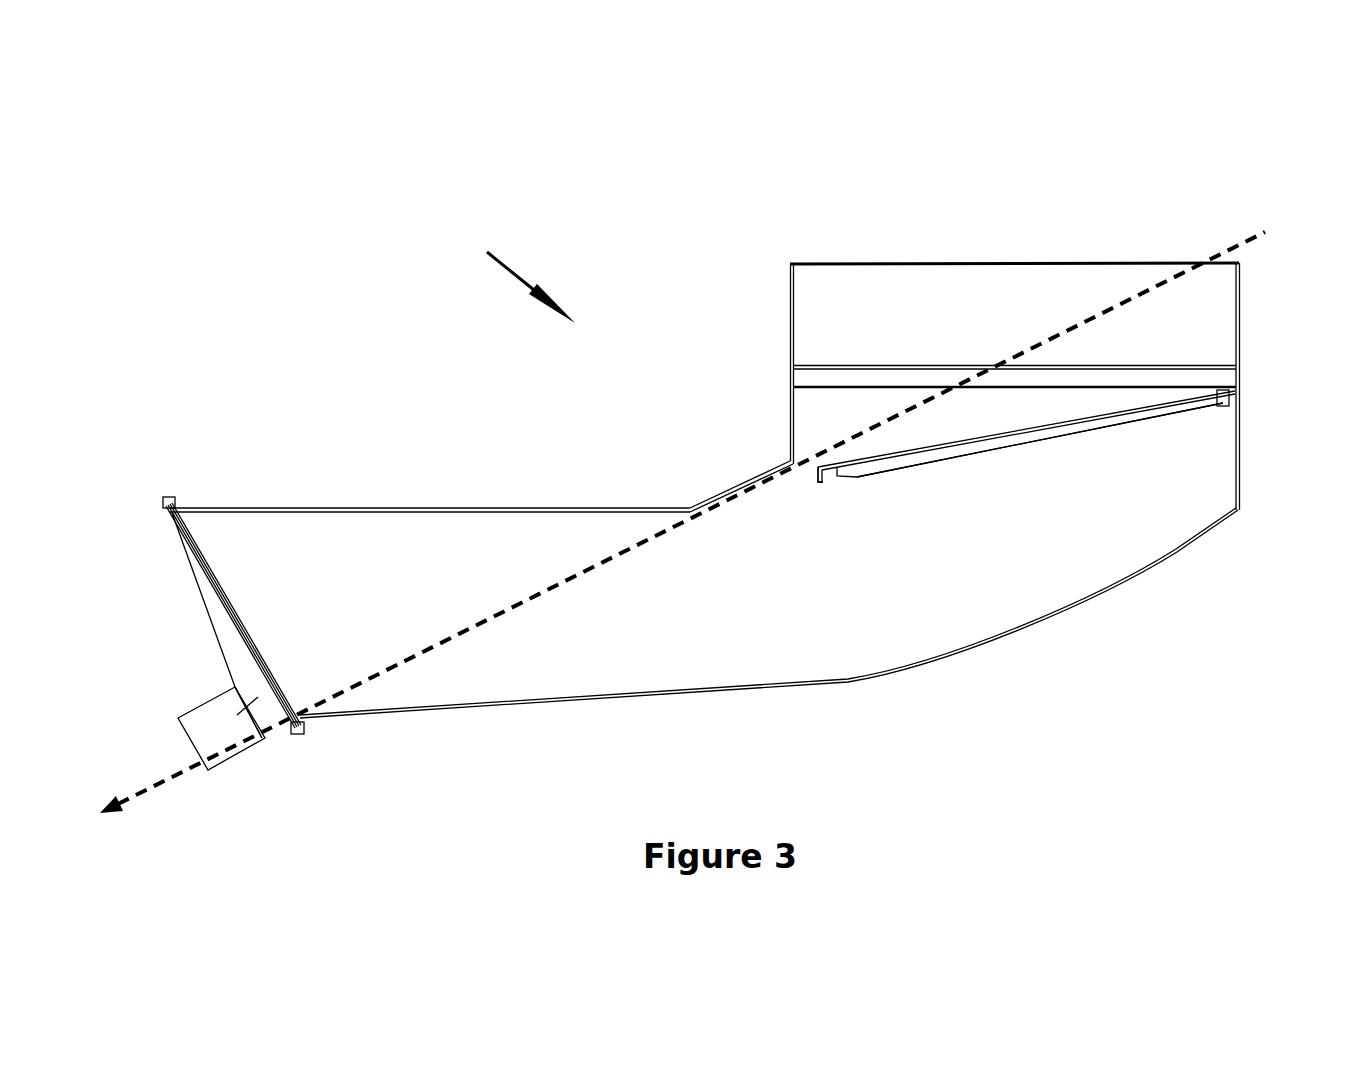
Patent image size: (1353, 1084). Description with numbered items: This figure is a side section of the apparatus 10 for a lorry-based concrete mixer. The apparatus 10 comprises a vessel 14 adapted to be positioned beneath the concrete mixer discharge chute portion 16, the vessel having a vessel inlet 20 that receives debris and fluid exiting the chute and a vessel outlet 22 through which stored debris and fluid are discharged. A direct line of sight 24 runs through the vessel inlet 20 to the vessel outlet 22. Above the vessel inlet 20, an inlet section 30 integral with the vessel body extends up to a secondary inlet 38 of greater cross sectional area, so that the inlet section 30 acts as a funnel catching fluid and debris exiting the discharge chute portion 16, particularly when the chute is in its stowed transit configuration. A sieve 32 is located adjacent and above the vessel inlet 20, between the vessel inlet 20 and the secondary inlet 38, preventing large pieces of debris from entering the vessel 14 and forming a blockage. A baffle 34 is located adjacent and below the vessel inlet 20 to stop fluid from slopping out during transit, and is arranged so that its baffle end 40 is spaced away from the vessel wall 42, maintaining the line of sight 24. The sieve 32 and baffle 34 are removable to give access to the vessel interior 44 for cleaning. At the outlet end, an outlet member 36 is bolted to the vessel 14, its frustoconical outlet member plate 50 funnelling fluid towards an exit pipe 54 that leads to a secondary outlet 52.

The apparatus 10 is at (512, 279).
The vessel 14 is at (480, 505).
The concrete mixer discharge chute portion 16 is at (848, 682).
The vessel inlet 20 is at (1177, 380).
The vessel outlet 22 is at (237, 635).
The line of sight 24 is at (1245, 237).
The inlet section 30 is at (1203, 332).
The sieve 32 is at (935, 367).
The baffle 34 is at (1040, 445).
The outlet member 36 is at (258, 697).
The secondary inlet 38 is at (853, 290).
The baffle end 40 is at (833, 467).
The vessel wall 42 is at (790, 410).
The vessel interior 44 is at (717, 602).
The outlet member plate 50 is at (208, 605).
The secondary outlet 52 is at (180, 735).
The exit pipe 54 is at (215, 699).